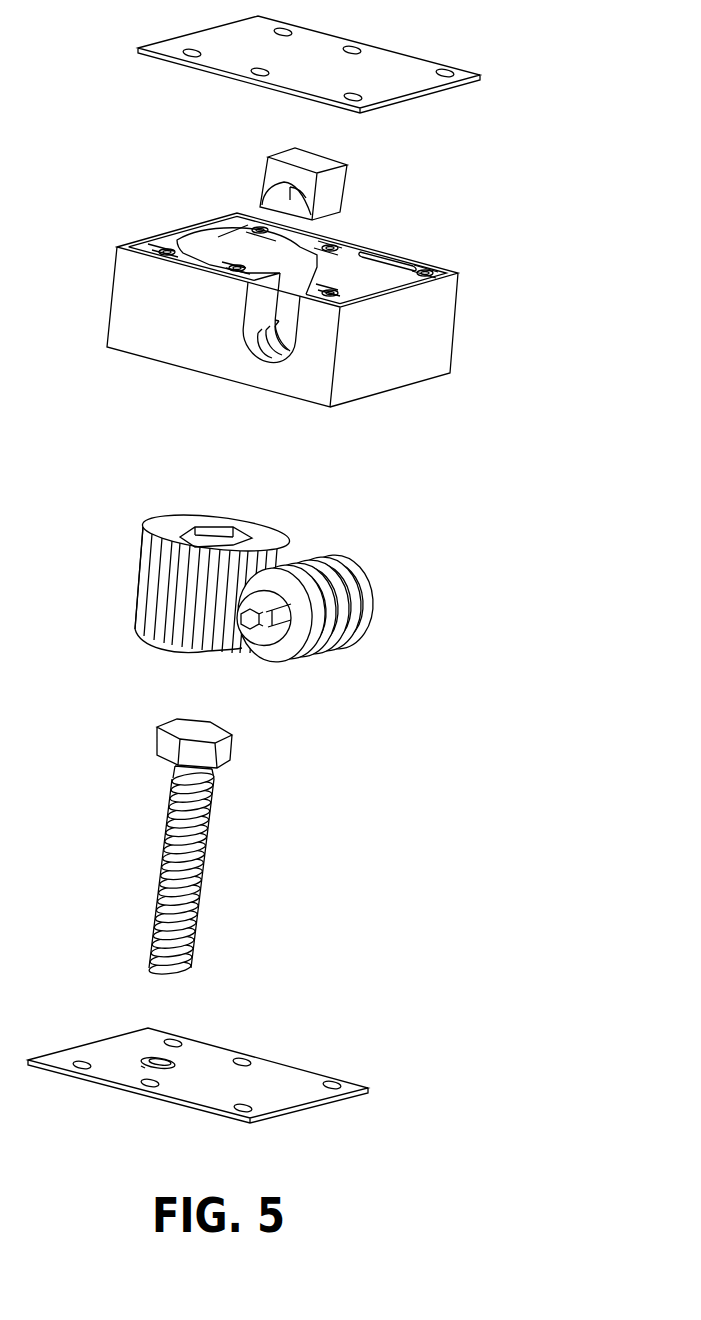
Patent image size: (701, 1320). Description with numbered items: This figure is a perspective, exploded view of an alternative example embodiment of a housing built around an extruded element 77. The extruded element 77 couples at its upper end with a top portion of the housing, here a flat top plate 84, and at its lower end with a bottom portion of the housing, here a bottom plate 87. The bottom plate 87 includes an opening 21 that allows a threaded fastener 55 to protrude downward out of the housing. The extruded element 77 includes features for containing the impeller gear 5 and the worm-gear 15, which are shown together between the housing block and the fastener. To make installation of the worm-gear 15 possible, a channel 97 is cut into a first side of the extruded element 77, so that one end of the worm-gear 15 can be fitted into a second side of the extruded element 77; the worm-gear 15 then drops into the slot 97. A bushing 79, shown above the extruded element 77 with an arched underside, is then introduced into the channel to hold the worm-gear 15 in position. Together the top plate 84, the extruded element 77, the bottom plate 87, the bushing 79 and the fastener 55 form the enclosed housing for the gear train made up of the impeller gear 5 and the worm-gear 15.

The top plate 84 is at (481, 76).
The bushing 79 is at (348, 187).
The extruded element 77 is at (322, 310).
The channel 97 is at (247, 306).
The impeller gear 5 is at (196, 522).
The worm-gear 15 is at (343, 565).
The threaded fastener 55 is at (235, 735).
The bottom plate 87 is at (239, 1067).
The opening 21 is at (140, 1065).